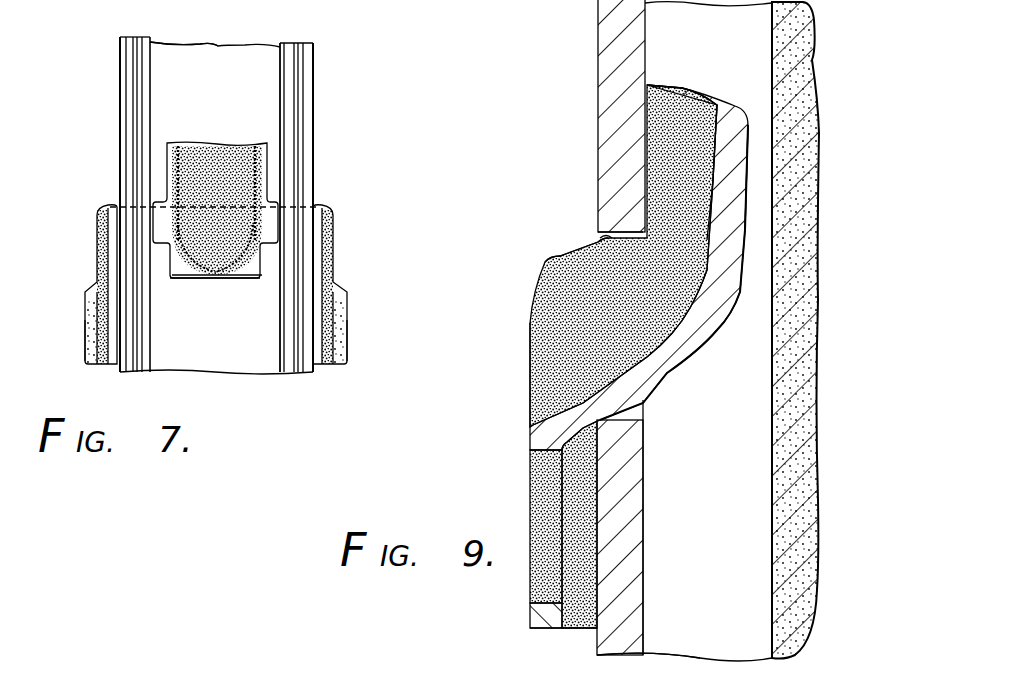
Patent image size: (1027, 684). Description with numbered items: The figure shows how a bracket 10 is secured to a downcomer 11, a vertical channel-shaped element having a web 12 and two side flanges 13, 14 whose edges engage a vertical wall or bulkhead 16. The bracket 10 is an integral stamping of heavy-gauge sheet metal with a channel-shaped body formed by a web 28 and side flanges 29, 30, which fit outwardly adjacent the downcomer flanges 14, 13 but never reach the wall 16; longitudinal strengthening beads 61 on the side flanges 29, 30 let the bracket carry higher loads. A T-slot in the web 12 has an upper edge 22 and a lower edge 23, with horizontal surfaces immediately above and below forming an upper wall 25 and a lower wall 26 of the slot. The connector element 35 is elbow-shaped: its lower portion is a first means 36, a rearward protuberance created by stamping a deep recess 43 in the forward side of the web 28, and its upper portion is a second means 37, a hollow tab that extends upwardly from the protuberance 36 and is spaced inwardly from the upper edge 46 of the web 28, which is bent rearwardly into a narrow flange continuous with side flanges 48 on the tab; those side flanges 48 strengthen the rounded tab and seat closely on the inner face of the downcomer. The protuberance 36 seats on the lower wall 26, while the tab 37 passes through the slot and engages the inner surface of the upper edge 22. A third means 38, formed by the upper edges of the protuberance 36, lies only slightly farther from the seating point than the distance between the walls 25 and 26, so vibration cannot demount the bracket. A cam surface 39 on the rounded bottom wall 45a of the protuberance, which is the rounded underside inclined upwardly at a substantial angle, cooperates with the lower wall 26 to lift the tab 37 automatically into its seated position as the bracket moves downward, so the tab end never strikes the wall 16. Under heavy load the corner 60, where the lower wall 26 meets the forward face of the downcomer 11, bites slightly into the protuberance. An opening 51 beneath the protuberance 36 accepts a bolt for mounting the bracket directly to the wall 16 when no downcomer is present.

In FIG. 9, the bracket 10 is at (636, 668).
In FIG. 7, the downcomer 11 is at (318, 101).
In FIG. 9, the downcomer 11 is at (598, 102).
In FIG. 7, the web 12 is at (210, 44).
In FIG. 9, the web 12 is at (598, 63).
In FIG. 7, the side flange 13 is at (313, 75).
In FIG. 9, the side flange 13 is at (662, 29).
In FIG. 7, the side flange 14 is at (120, 70).
In FIG. 9, the wall 16 is at (790, 648).
In FIG. 9, the upper edge of the slot 22 is at (618, 222).
In FIG. 7, the lower edge of the slot 23 is at (222, 309).
In FIG. 9, the upper wall of the slot 25 is at (608, 236).
In FIG. 7, the lower wall of the slot 26 is at (248, 275).
In FIG. 9, the lower wall of the slot 26 is at (640, 413).
In FIG. 9, the web 28 is at (530, 620).
In FIG. 7, the side flange 29 is at (100, 300).
In FIG. 7, the side flange 30 is at (333, 278).
In FIG. 9, the side flange 30 is at (575, 630).
In FIG. 7, the connector element 35 is at (202, 140).
In FIG. 9, the connector element 35 is at (750, 142).
In FIG. 7, the first means 36 is at (212, 248).
In FIG. 9, the first means 36 is at (660, 380).
In FIG. 7, the second means 37 is at (220, 146).
In FIG. 9, the second means 37 is at (682, 90).
In FIG. 9, the third means 38 is at (556, 258).
In FIG. 9, the cam surface 39 is at (648, 404).
In FIG. 9, the recess 43 is at (542, 326).
In FIG. 7, the bottom wall 45a is at (232, 278).
In FIG. 7, the upper edge of web 46 is at (110, 207).
In FIG. 7, the side flanges 48 is at (178, 143).
In FIG. 9, the opening 51 is at (530, 481).
In FIG. 9, the corner 60 is at (533, 412).
In FIG. 7, the beads 61 is at (85, 343).